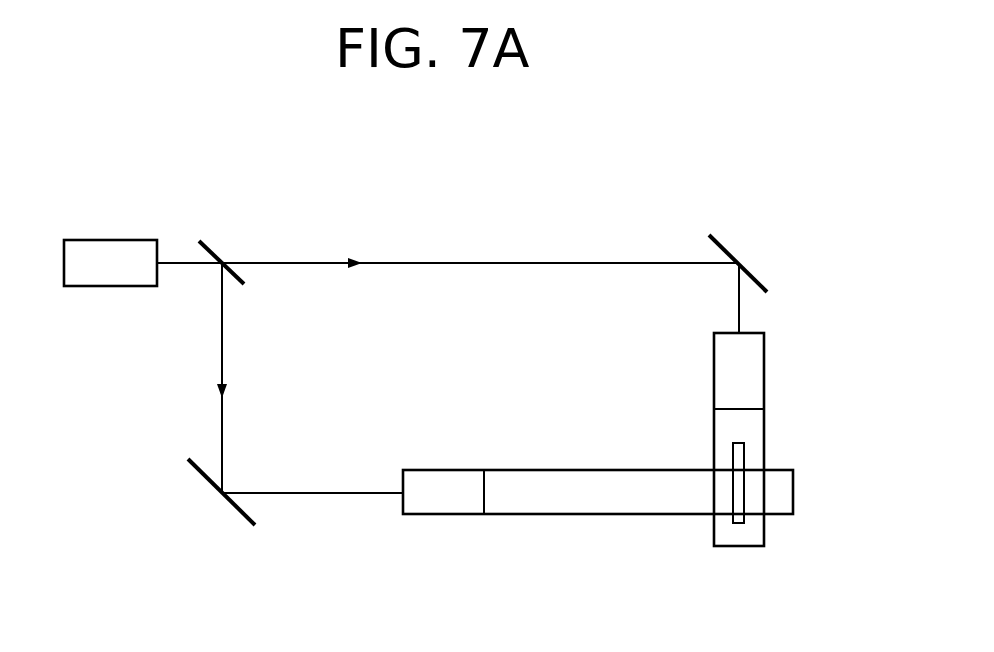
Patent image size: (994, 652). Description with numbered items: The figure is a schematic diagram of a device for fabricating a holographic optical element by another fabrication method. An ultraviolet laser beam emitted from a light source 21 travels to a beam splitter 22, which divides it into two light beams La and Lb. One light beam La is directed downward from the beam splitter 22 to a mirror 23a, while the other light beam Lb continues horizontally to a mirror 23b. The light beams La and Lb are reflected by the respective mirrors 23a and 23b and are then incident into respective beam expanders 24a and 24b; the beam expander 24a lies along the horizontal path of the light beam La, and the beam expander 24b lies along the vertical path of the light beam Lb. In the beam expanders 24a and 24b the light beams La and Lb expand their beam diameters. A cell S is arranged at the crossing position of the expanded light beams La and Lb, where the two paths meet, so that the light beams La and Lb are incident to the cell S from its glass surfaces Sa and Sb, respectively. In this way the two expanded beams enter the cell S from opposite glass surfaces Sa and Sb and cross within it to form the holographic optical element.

The light source 21 is at (112, 253).
The beam splitter 22 is at (218, 250).
The mirror 23a is at (203, 475).
The mirror 23b is at (731, 251).
The beam expander 24a is at (442, 502).
The beam expander 24b is at (752, 368).
The cell S is at (745, 492).
The glass surface Sa is at (733, 508).
The glass surface Sb is at (743, 443).
The light beam La is at (205, 378).
The light beam Lb is at (448, 248).